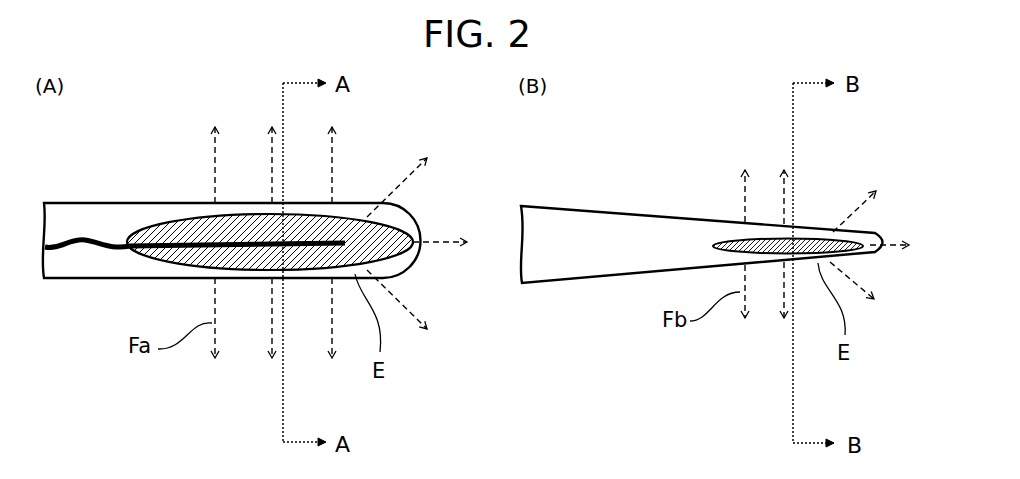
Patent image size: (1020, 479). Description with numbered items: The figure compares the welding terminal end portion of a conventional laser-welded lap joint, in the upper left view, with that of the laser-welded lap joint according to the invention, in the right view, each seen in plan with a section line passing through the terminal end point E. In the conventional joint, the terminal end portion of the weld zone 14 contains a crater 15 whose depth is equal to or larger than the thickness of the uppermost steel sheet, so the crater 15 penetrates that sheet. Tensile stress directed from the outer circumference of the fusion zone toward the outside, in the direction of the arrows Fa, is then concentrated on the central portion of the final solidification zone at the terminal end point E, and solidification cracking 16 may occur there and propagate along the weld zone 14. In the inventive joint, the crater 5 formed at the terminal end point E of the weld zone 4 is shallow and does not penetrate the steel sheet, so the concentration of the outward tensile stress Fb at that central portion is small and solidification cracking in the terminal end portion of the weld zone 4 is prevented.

The weld zone 14 is at (100, 220).
The crater 15 is at (262, 218).
The solidification cracking 16 is at (63, 248).
The weld zone 4 is at (583, 223).
The crater 5 is at (747, 227).